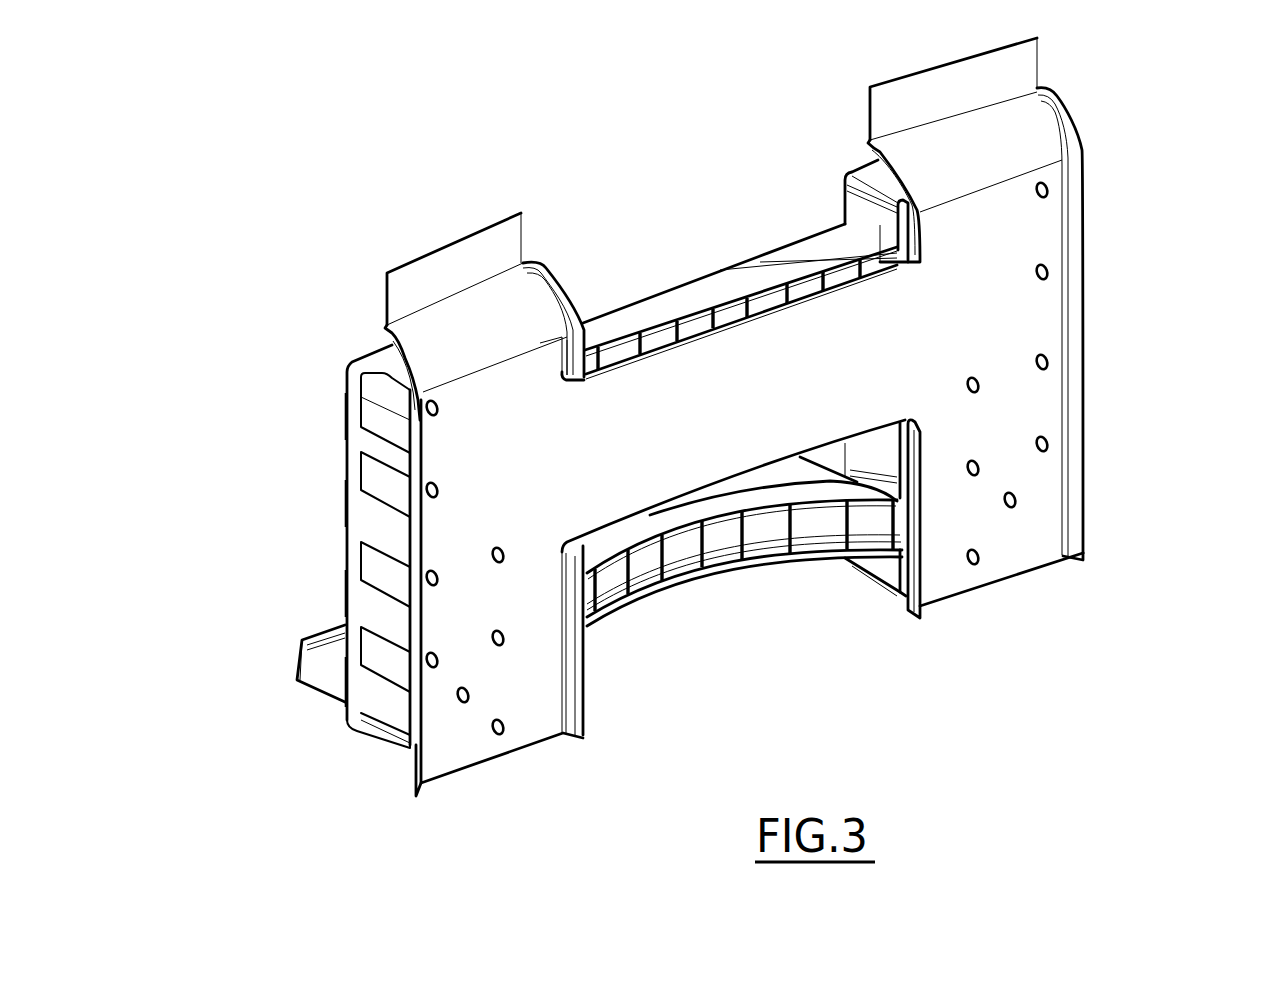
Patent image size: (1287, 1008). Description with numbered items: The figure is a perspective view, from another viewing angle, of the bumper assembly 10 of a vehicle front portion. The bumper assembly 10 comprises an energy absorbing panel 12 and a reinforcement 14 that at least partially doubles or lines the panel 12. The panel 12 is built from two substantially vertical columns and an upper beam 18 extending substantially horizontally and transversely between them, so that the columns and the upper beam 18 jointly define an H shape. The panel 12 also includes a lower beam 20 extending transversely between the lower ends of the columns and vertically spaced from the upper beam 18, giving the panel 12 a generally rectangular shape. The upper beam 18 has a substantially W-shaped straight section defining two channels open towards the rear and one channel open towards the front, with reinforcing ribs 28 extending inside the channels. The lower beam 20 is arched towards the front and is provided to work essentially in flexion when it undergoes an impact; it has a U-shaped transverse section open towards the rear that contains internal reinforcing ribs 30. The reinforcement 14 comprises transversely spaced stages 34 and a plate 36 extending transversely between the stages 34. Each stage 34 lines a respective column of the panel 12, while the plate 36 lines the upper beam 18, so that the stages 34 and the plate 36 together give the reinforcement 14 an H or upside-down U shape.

The bumper assembly 10 is at (619, 168).
The energy absorbing panel 12 is at (300, 440).
The reinforcement 14 is at (1124, 222).
The upper beam 18 is at (774, 218).
The lower beam 20 is at (650, 616).
The reinforcing ribs 28 is at (717, 320).
The internal reinforcing ribs 30 is at (742, 552).
The stages 34 is at (473, 748).
The plate 36 is at (663, 483).